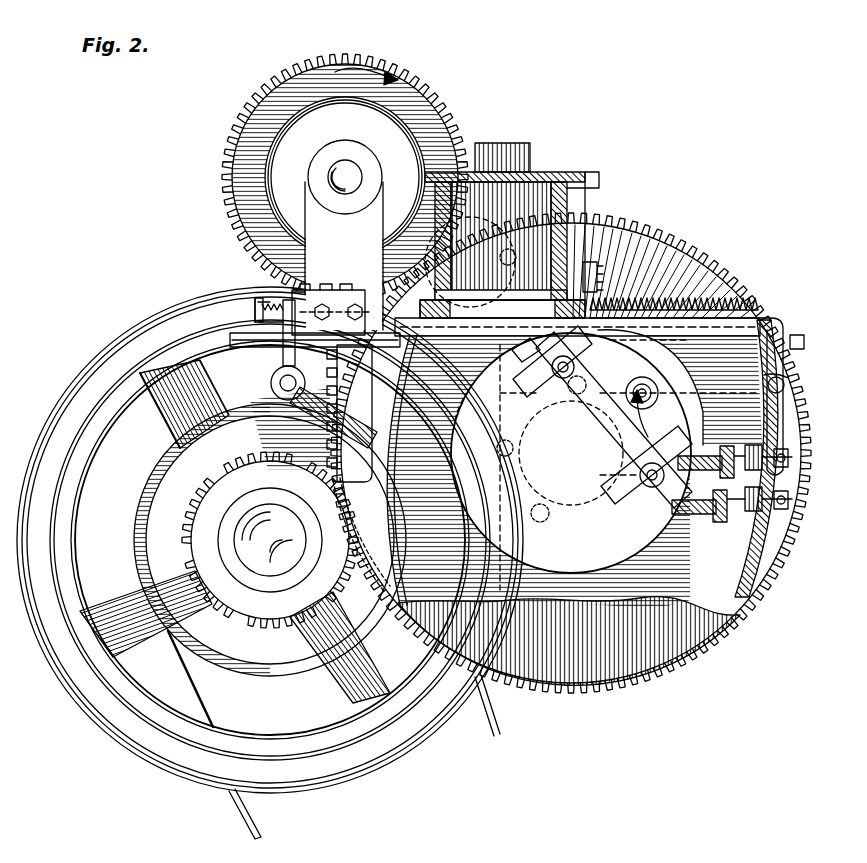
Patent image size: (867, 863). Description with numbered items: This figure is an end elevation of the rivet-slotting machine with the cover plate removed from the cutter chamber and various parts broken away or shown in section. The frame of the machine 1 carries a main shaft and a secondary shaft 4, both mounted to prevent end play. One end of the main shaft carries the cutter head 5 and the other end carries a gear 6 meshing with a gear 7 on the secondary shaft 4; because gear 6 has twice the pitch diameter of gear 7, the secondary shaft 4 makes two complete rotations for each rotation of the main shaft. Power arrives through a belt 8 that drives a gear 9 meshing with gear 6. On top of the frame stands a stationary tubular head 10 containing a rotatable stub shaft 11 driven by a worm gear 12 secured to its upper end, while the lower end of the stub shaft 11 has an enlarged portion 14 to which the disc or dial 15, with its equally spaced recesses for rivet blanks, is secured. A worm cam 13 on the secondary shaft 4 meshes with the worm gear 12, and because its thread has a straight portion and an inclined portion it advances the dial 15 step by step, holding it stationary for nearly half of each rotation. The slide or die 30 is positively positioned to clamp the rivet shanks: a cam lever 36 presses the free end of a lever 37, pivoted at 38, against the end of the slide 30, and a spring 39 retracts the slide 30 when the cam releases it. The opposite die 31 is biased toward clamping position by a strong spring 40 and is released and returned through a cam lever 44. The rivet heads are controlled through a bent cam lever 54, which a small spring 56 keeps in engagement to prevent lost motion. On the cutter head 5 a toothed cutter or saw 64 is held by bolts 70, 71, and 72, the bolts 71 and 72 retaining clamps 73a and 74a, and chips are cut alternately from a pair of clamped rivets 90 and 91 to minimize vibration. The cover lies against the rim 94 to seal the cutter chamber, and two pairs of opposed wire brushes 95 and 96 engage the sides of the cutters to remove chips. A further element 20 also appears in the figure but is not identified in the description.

The frame of the machine 1 is at (640, 598).
The secondary shaft 4 is at (348, 165).
The cutter head 5 is at (528, 553).
The gear 6 is at (583, 675).
The gear 7 is at (432, 112).
The belt 8 is at (247, 833).
The gear 9 is at (270, 627).
The stationary tubular head 10 is at (570, 200).
The stub shaft 11 is at (496, 244).
The worm gear 12 is at (560, 184).
The worm cam 13 is at (280, 128).
The enlarged portion 14 is at (432, 312).
The disc 15 is at (460, 322).
The guide plate 20 is at (690, 446).
The slide or die 30 is at (331, 310).
The die 31 is at (760, 318).
The cam lever 36 is at (458, 480).
The lever 37 is at (288, 303).
The pivot 38 is at (282, 296).
The spring 39 is at (285, 330).
The strong spring 40 is at (642, 302).
The cam lever 44 is at (648, 413).
The bent cam lever 54 is at (498, 398).
The small spring 56 is at (605, 268).
The toothed cutter or saw 64 is at (709, 430).
The bolt 70 is at (640, 385).
The bolt 71 is at (614, 420).
The bolt 72 is at (640, 472).
The clamp 73a is at (566, 392).
The clamp 74a is at (640, 502).
The clamped rivet 90 is at (518, 358).
The clamped rivet 91 is at (552, 355).
The rim 94 is at (383, 503).
The wire brushes 95 is at (710, 523).
The wire brushes 96 is at (711, 457).